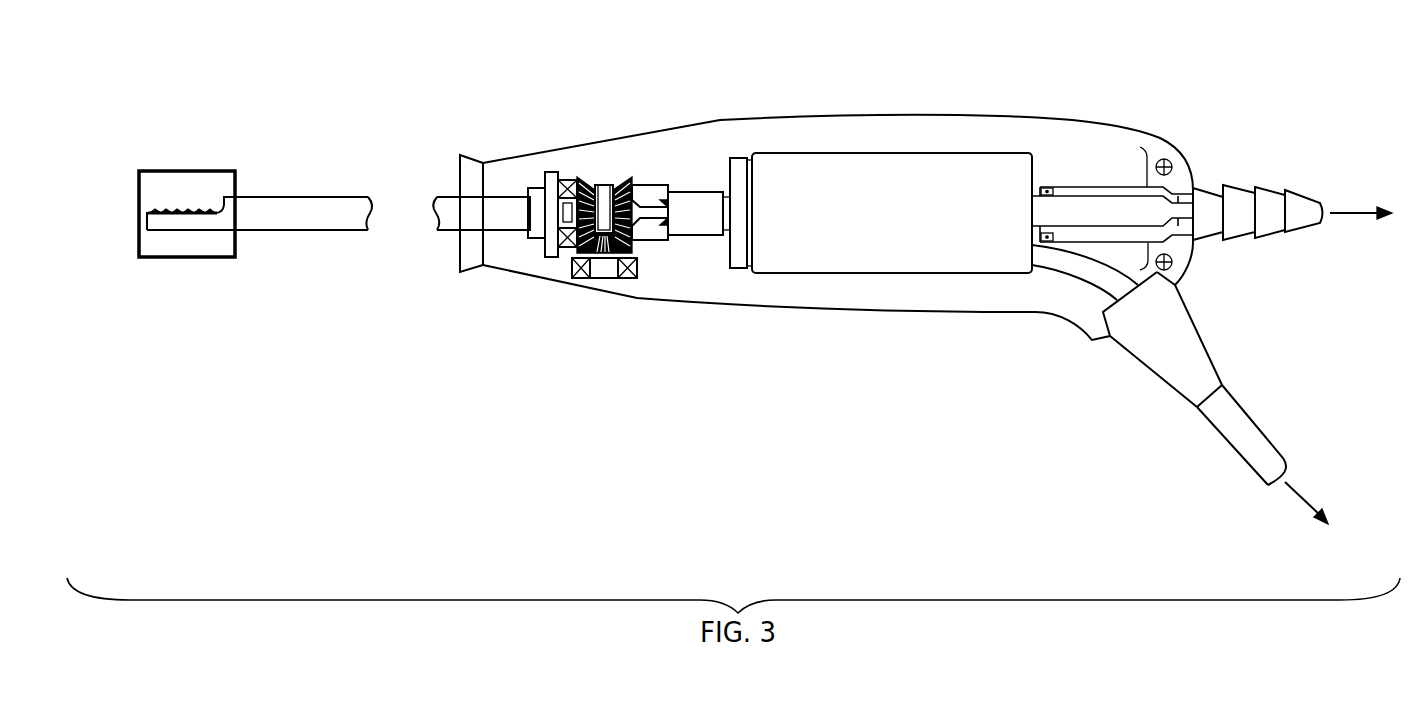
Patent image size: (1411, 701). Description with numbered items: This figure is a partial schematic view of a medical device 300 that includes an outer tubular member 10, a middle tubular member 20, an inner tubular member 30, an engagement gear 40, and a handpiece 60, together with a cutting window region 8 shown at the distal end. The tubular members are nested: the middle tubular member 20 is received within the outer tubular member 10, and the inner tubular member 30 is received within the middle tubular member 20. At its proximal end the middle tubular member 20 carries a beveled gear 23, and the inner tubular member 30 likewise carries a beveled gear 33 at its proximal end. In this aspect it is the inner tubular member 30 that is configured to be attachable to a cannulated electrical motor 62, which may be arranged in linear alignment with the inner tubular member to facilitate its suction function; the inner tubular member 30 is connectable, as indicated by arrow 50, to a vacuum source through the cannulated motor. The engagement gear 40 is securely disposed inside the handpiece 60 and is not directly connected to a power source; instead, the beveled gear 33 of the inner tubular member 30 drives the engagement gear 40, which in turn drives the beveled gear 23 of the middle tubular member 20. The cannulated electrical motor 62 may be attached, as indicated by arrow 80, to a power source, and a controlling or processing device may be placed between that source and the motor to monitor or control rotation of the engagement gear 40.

The medical device 300 is at (277, 72).
The cutting window region 8 is at (173, 170).
The outer tubular member 10 is at (455, 217).
The middle tubular member 20 is at (567, 213).
The beveled gear 23 is at (592, 215).
The inner tubular member 30 is at (606, 215).
The beveled gear 33 is at (628, 183).
The engagement gear 40 is at (605, 267).
The arrow 50 is at (1353, 212).
The handpiece 60 is at (967, 113).
The cannulated electrical motor 62 is at (855, 230).
The arrow 80 is at (1302, 497).